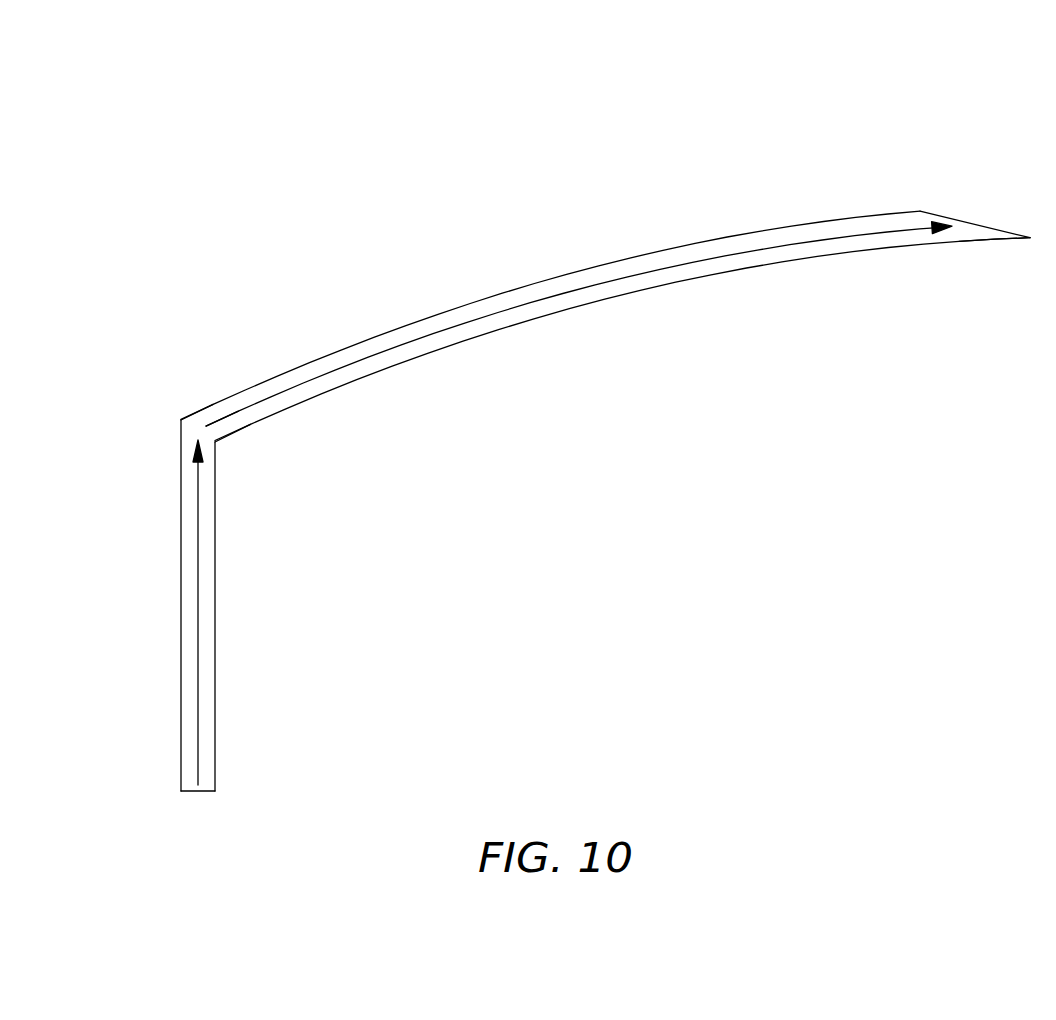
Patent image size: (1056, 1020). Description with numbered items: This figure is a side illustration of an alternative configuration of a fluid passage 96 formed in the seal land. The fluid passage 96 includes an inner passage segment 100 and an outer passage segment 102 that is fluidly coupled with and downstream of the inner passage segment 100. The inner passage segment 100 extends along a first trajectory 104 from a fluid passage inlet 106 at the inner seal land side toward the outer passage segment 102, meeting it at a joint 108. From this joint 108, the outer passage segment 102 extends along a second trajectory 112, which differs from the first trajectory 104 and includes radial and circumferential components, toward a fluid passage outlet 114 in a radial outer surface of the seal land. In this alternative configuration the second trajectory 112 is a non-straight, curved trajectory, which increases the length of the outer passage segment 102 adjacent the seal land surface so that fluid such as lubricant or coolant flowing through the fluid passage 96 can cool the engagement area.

The fluid passage 96 is at (948, 120).
The inner passage segment 100 is at (156, 420).
The outer passage segment 102 is at (908, 173).
The first trajectory 104 is at (198, 574).
The fluid passage inlet 106 is at (200, 792).
The joint 108 is at (181, 420).
The second trajectory 112 is at (537, 300).
The fluid passage outlet 114 is at (973, 218).